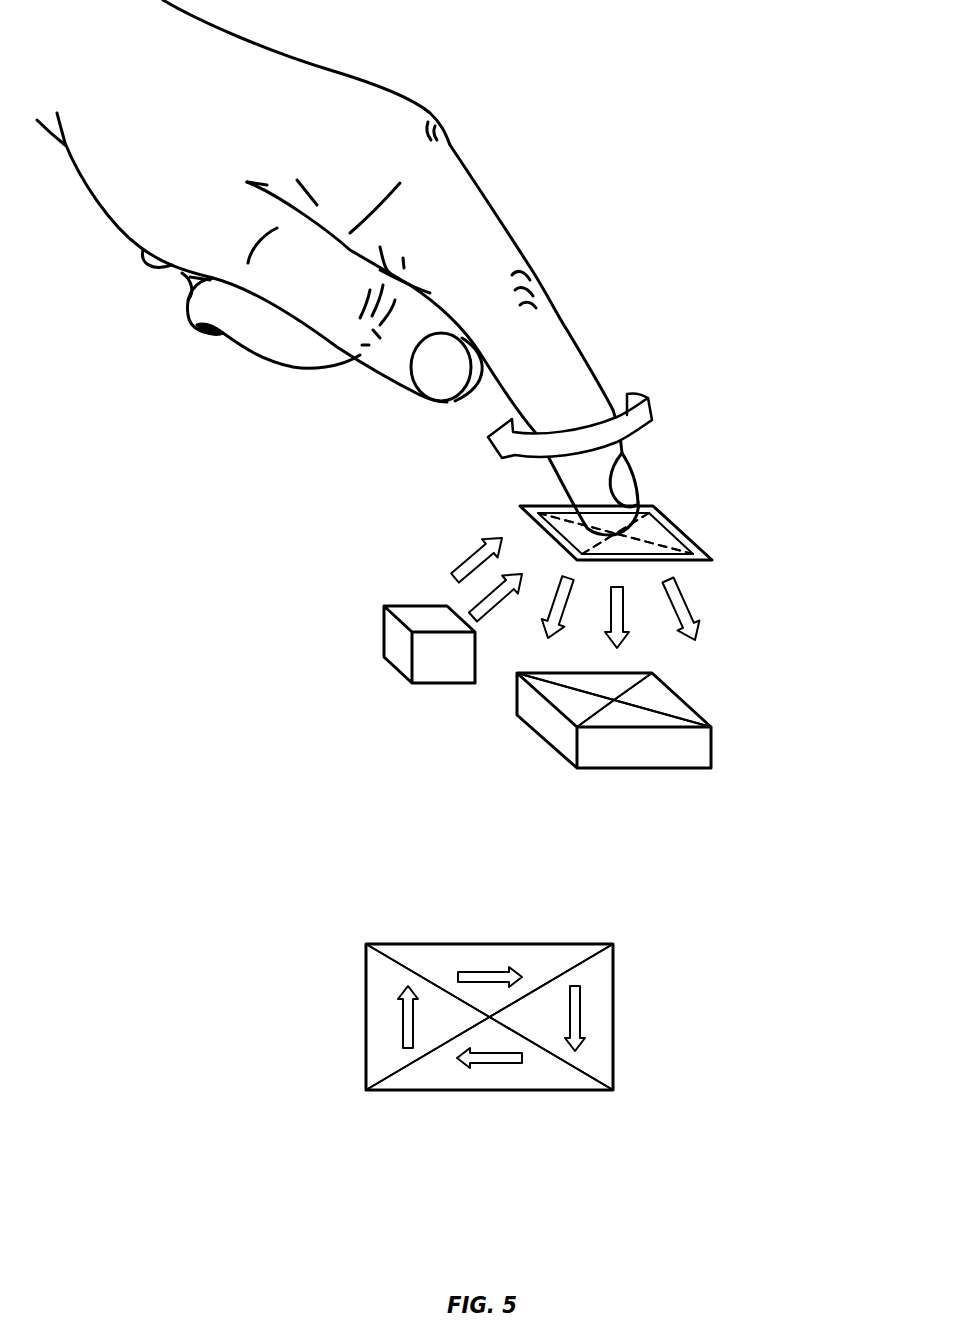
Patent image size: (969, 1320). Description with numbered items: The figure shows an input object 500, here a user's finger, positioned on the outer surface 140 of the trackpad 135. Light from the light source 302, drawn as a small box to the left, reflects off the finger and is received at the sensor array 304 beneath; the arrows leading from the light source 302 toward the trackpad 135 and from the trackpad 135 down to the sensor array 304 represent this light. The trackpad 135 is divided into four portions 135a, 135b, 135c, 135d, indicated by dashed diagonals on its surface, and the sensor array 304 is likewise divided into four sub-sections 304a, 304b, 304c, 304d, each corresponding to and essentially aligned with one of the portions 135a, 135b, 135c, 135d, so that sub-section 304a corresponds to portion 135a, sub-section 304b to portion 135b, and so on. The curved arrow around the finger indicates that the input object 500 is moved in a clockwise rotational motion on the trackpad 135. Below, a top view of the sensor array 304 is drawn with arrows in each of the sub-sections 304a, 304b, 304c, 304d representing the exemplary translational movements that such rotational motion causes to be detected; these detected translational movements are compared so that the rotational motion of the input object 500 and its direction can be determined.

The input object 500 is at (583, 352).
The trackpad 135 is at (528, 505).
The portion of the trackpad 135a is at (540, 520).
The portion of the trackpad 135b is at (645, 508).
The portion of the trackpad 135c is at (673, 527).
The portion of the trackpad 135d is at (668, 553).
The outer surface 140 is at (650, 515).
The light source 302 is at (384, 630).
The sensor array 304 is at (540, 743).
The sub-section of the sensor array 304a is at (563, 699).
The sub-section of the sensor array 304b is at (625, 679).
The sub-section of the sensor array 304c is at (663, 695).
The sub-section of the sensor array 304d is at (635, 720).